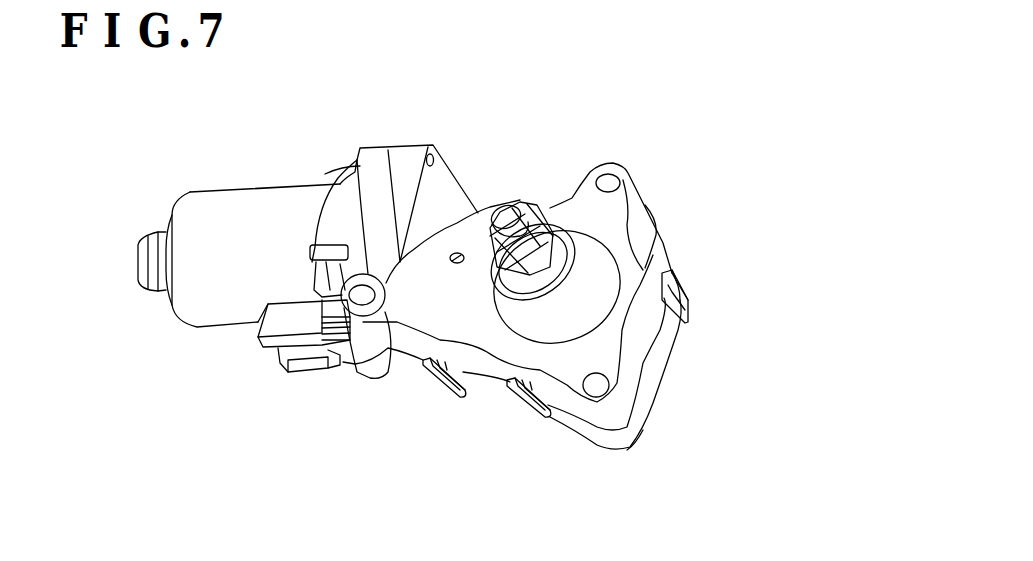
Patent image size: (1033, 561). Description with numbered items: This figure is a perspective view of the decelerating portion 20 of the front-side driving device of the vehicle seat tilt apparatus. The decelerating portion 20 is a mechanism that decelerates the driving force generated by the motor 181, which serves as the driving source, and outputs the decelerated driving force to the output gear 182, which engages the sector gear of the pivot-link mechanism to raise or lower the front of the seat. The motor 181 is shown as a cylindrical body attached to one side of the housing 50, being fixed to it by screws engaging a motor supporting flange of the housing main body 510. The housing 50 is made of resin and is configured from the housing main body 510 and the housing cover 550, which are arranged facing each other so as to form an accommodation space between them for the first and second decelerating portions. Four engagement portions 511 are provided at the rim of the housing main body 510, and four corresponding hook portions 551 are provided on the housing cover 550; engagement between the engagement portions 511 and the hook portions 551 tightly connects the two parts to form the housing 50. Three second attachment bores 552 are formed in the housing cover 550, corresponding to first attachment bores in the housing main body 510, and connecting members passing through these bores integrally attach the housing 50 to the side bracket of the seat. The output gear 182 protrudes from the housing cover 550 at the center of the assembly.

The decelerating portion 20 is at (613, 117).
The housing 50 is at (703, 287).
The motor 181 is at (232, 235).
The output gear 182 is at (559, 203).
The housing main body 510 is at (650, 370).
The engagement portion 511 is at (532, 410).
The housing cover 550 is at (637, 273).
The hook portion 551 is at (463, 397).
The second attachment bore 552 is at (612, 180).